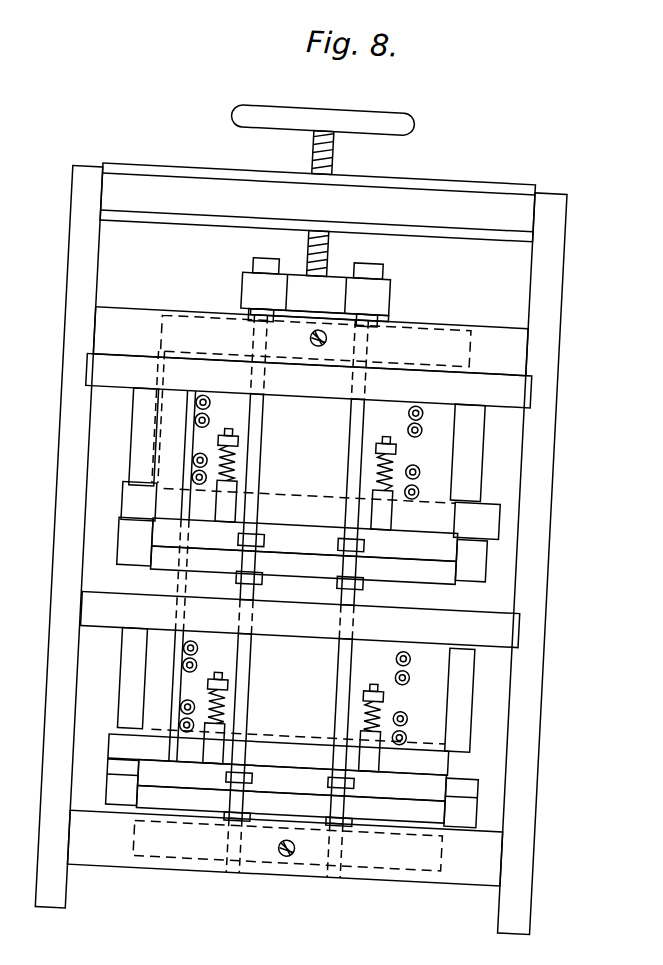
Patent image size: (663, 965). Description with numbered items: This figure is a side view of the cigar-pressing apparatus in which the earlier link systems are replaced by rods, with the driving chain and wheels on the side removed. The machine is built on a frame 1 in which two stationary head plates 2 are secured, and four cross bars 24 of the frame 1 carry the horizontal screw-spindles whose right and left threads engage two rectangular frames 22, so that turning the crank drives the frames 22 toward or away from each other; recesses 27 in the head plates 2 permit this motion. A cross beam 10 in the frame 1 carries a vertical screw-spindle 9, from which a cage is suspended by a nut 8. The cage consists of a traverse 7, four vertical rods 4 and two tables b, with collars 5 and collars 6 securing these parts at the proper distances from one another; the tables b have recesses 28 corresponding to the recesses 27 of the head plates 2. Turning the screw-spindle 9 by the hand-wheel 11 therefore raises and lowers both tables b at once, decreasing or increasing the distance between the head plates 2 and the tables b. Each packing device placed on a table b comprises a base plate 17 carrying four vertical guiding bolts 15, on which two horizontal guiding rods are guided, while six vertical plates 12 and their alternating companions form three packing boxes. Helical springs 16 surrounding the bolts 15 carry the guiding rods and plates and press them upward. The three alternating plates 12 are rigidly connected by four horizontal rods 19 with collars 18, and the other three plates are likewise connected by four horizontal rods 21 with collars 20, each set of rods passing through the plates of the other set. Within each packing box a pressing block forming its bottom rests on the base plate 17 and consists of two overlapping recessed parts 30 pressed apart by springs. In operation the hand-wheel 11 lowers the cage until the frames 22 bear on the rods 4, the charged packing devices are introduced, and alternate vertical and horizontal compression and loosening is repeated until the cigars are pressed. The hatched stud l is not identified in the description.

The frame 1 is at (301, 549).
The head plate 2 is at (303, 500).
The vertical rod 4 is at (277, 421).
The collar 5 is at (284, 530).
The collar 6 is at (372, 258).
The traverse 7 is at (315, 292).
The nut 8 is at (312, 314).
The vertical screw-spindle 9 is at (333, 150).
The cross beam 10 is at (147, 164).
The hand-wheel 11 is at (386, 104).
The vertical plate 12 is at (145, 424).
The vertical guiding bolt 15 is at (228, 430).
The helical spring 16 is at (252, 452).
The base plate 17 is at (132, 522).
The collar 18 is at (222, 656).
The horizontal rod 19 is at (208, 646).
The collar 20 is at (420, 398).
The horizontal rod 21 is at (436, 412).
The rectangular frame 22 is at (448, 322).
The cross bar 24 is at (297, 596).
The recess 27 is at (208, 612).
The recess 28 is at (214, 544).
The recessed part 30 is at (304, 631).
The stud l is at (340, 324).
The table b is at (296, 683).